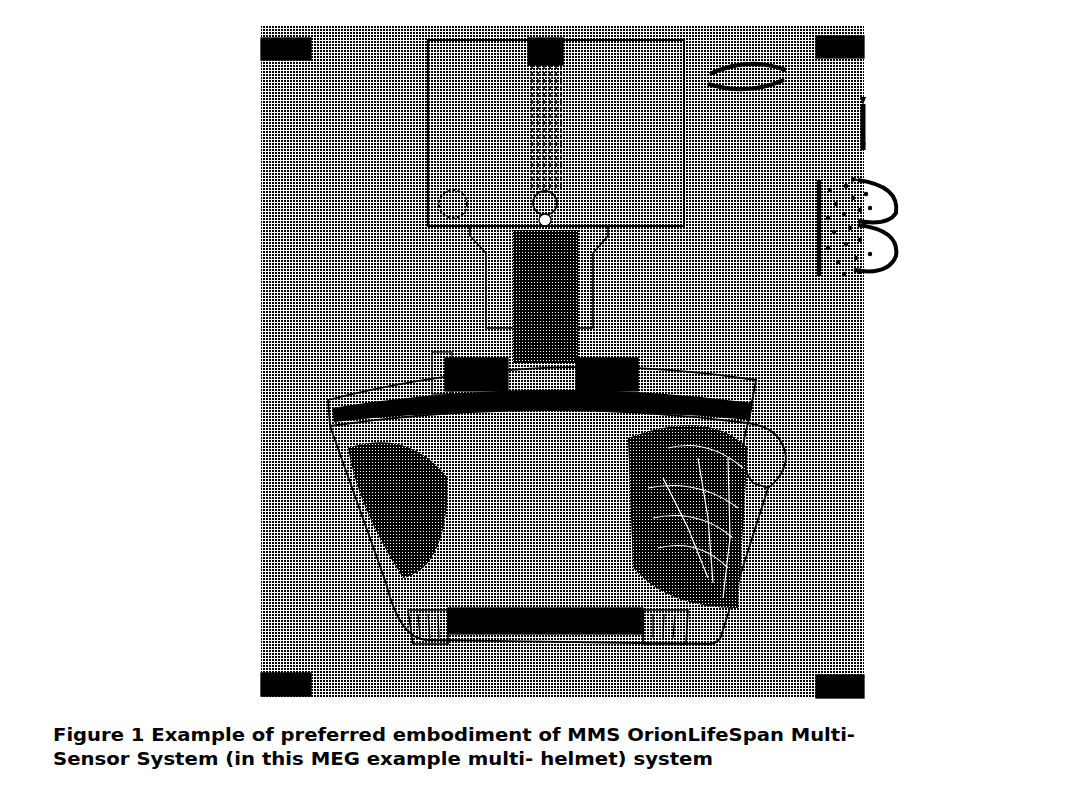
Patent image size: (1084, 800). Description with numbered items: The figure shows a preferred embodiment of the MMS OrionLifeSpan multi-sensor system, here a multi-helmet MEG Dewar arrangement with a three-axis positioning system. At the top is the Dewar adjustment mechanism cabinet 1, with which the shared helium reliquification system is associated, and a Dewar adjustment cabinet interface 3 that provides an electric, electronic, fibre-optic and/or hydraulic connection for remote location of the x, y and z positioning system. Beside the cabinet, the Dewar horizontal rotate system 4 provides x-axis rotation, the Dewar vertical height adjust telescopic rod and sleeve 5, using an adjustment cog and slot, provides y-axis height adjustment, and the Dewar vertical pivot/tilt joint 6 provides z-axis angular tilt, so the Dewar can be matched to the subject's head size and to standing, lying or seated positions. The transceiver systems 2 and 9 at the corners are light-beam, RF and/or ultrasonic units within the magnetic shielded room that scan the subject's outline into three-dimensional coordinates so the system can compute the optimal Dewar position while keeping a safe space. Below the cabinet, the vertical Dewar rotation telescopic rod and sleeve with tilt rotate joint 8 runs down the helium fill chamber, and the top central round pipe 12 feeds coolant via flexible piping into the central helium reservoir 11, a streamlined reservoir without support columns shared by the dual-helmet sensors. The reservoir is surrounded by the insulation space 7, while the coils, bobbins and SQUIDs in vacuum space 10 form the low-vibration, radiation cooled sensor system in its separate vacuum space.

The Dewar adjustment mechanism cabinet 1 is at (480, 75).
The light-beam, RF and/or ultrasonic transceiver system 2 is at (305, 25).
The Dewar adjustment cabinet interface 3 is at (430, 194).
The Dewar horizontal rotate system 4 is at (556, 46).
The Dewar vertical height adjust telescopic rod and sleeve 5 is at (540, 120).
The Dewar vertical pivot/tilt joint 6 is at (540, 200).
The insulation space 7 is at (410, 630).
The vertical Dewar rotation telescopic rod and sleeve with tilt rotate joint 8 is at (578, 298).
The light-beam, RF and/or ultrasonic transceiver system 9 is at (808, 678).
The coils, bobbins, SQUIDs in vacuum space 10 is at (742, 473).
The helium reservoir 11 is at (560, 567).
The top central round pipe 12 is at (640, 348).